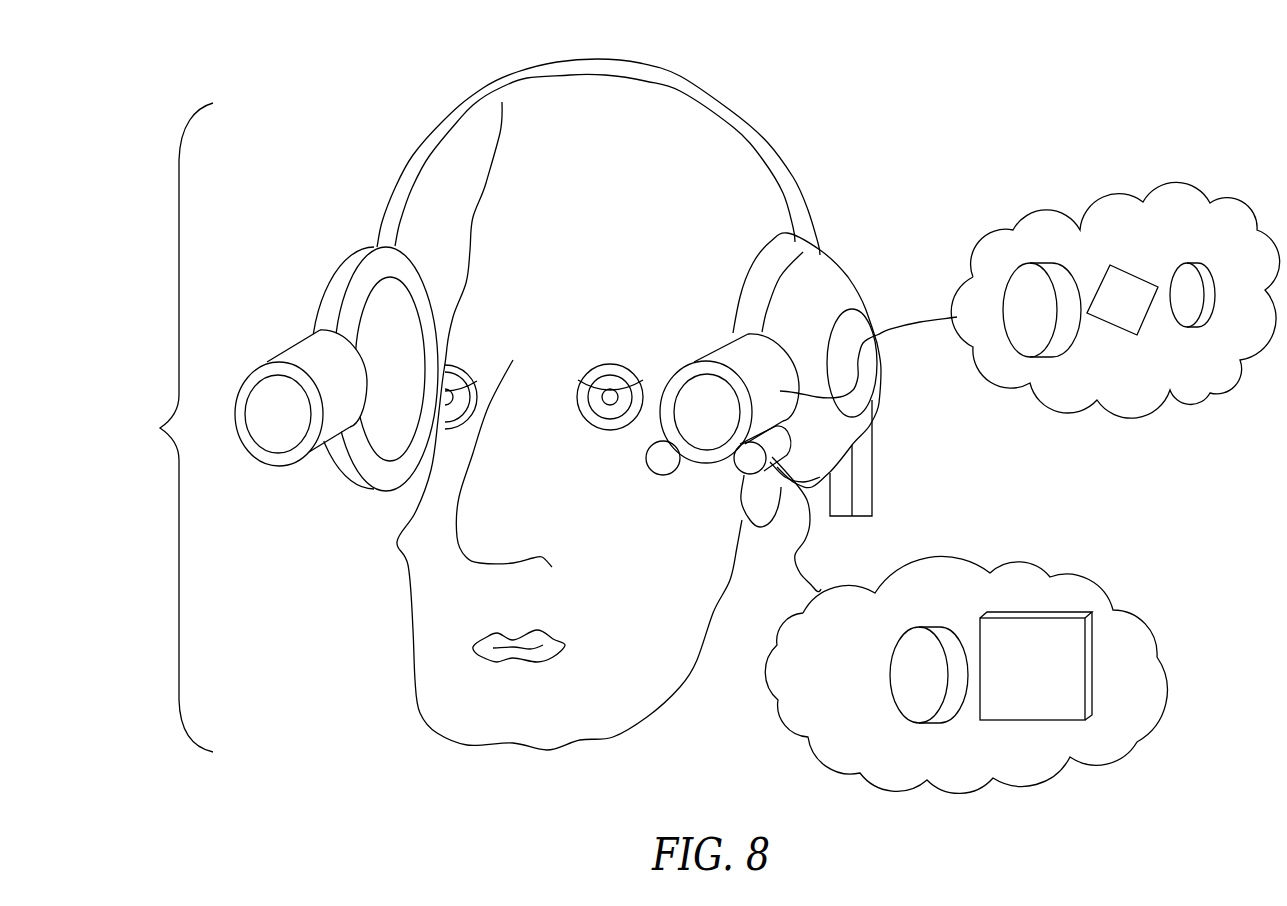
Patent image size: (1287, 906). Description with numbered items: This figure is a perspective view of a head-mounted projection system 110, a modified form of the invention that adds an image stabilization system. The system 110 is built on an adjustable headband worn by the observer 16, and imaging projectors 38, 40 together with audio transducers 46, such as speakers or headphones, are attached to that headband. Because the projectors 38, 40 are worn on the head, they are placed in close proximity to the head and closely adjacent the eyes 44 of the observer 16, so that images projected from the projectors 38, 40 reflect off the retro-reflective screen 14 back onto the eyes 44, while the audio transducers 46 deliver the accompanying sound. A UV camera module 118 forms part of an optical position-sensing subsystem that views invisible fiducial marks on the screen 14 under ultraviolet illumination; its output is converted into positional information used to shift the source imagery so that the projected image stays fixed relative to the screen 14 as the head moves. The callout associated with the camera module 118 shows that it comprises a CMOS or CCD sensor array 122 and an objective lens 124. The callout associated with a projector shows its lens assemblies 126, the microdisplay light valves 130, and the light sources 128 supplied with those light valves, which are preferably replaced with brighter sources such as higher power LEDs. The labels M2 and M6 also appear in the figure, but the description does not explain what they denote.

The headband M2 is at (643, 62).
The head-mounted projection system 110 is at (159, 427).
The image projector 40 is at (277, 356).
The eyes 44 is at (470, 366).
The observer 16 is at (412, 690).
The screen 14 is at (647, 542).
The image projector 38 is at (700, 358).
The audio transducers 46 is at (848, 277).
The microphone M6 is at (657, 458).
The UV camera module 118 is at (712, 463).
The lens assemblies 126 is at (1083, 342).
The light sources 128 is at (1187, 262).
The microdisplay light valves 130 is at (1147, 318).
The objective lens 124 is at (902, 670).
The sensor array 122 is at (1052, 708).